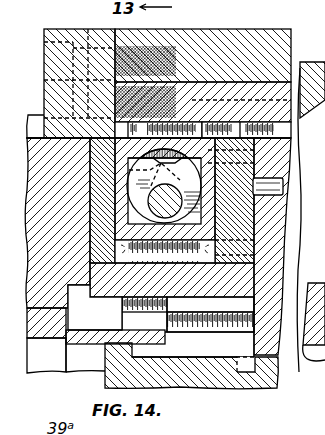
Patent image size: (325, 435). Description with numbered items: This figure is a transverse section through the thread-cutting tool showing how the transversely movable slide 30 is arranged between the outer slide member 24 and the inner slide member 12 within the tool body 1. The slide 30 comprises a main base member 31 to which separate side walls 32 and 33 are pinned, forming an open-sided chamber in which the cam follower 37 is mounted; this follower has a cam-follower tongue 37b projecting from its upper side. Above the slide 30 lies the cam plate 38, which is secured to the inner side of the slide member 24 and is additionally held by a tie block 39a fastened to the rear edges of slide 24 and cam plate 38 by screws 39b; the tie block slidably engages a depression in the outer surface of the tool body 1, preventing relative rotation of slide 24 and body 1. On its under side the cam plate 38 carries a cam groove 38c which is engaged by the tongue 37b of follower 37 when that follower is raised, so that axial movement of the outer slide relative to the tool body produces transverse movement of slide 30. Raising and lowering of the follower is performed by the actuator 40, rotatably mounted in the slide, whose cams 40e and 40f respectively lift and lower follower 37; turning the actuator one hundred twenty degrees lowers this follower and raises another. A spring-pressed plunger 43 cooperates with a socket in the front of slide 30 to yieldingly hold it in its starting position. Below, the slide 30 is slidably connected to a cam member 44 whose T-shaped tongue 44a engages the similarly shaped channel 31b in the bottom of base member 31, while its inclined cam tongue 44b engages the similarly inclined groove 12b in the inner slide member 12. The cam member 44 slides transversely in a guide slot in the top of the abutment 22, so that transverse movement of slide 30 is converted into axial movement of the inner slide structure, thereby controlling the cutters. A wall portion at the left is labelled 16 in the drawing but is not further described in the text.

The tool body 1 is at (57, 223).
The inner slide member 12 is at (102, 371).
The inclined groove or slot 12b is at (232, 388).
The wall 16 is at (31, 116).
The abutment 22 is at (30, 372).
The slide member 24 is at (238, 30).
The transversely movable slide 30 is at (110, 300).
The main base member 31 is at (248, 278).
The channel 31b is at (146, 289).
The side wall 32 is at (92, 184).
The side wall 33 is at (244, 219).
The cam follower 37 is at (114, 199).
The cam-follower tongue 37b is at (185, 122).
The cam plate 38 is at (203, 80).
The cam groove 38c is at (244, 122).
The tie block 39a is at (64, 30).
The screws 39b is at (90, 29).
The actuator 40 is at (168, 225).
The cam 40e is at (112, 170).
The cam 40f is at (110, 220).
The spring-pressed plunger 43 is at (262, 178).
The cam member 44 is at (193, 327).
The tongue 44a is at (207, 304).
The cam tongue 44b is at (243, 373).